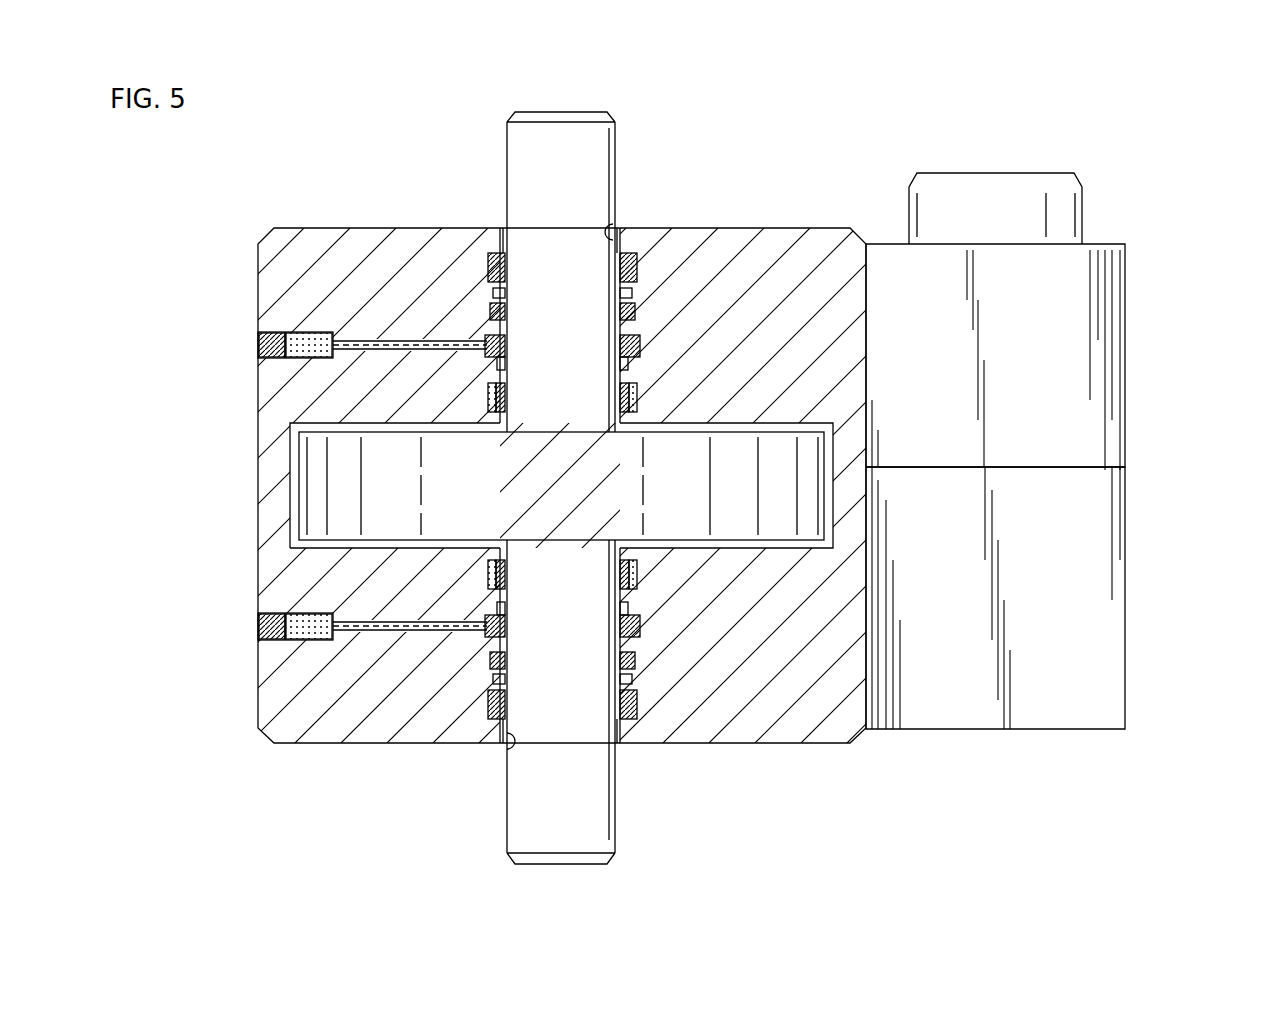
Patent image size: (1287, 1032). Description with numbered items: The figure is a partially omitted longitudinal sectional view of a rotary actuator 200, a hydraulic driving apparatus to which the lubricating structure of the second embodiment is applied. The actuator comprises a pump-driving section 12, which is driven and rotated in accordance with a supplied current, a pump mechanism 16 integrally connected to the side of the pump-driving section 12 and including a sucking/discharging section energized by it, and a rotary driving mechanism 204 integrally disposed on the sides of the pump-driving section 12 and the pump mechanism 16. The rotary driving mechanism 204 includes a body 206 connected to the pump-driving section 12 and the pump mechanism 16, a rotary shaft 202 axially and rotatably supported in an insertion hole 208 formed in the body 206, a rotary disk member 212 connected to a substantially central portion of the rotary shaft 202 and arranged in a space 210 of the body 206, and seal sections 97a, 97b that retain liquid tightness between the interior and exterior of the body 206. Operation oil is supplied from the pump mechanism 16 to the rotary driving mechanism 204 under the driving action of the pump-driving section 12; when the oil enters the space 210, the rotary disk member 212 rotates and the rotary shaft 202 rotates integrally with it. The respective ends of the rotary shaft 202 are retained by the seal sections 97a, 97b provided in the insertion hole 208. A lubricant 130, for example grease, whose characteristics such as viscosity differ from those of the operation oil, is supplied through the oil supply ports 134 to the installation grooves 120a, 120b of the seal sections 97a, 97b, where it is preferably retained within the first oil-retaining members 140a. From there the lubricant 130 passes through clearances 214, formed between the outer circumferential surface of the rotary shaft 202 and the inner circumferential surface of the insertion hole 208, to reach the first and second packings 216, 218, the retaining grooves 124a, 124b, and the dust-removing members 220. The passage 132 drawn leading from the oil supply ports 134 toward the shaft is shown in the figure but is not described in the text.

The pump-driving section 12 is at (1125, 293).
The pump mechanism 16 is at (1125, 580).
The seal section 97a is at (300, 340).
The seal section 97b is at (300, 640).
The installation groove 120a is at (497, 360).
The installation groove 120b is at (497, 612).
The retaining groove 124a is at (622, 290).
The retaining groove 124b is at (622, 700).
The lubricant 130 is at (292, 335).
The fluid passage 132 is at (378, 333).
The oil supply port 134 is at (262, 346).
The first oil-retaining member 140a is at (506, 345).
The rotary actuator 200 is at (1046, 408).
The rotary shaft 202 is at (590, 160).
The rotary driving mechanism 204 is at (395, 228).
The body 206 is at (762, 725).
The insertion hole 208 is at (614, 230).
The space 210 is at (322, 548).
The rotary disk member 212 is at (312, 502).
The clearance 214 is at (500, 240).
The first packing 216 is at (506, 397).
The second packing 218 is at (506, 312).
The dust-removing member 220 is at (506, 268).